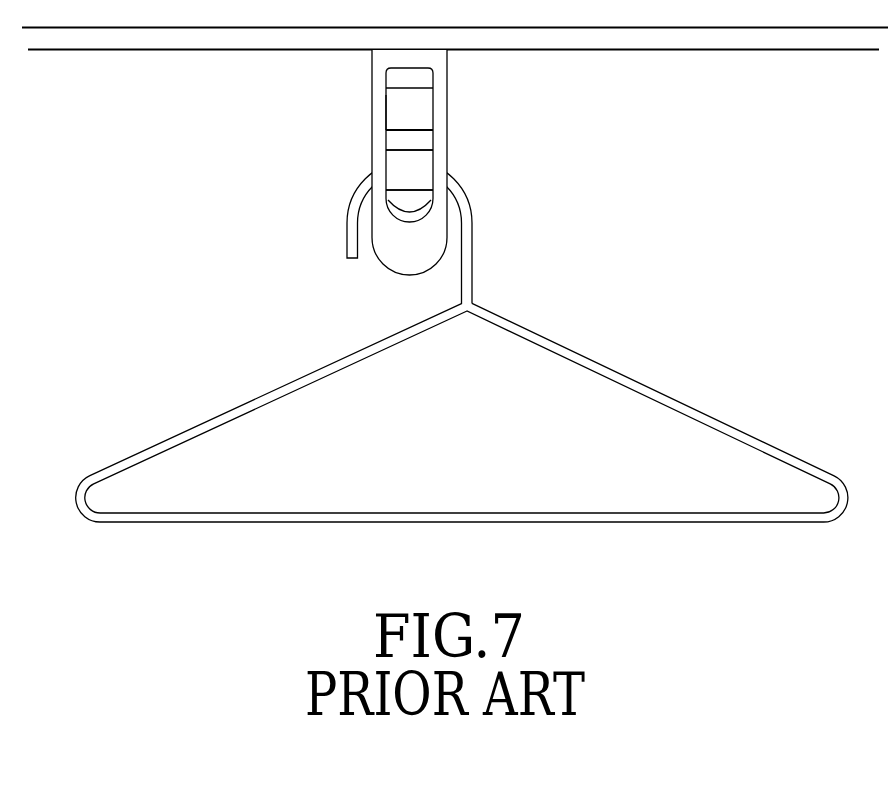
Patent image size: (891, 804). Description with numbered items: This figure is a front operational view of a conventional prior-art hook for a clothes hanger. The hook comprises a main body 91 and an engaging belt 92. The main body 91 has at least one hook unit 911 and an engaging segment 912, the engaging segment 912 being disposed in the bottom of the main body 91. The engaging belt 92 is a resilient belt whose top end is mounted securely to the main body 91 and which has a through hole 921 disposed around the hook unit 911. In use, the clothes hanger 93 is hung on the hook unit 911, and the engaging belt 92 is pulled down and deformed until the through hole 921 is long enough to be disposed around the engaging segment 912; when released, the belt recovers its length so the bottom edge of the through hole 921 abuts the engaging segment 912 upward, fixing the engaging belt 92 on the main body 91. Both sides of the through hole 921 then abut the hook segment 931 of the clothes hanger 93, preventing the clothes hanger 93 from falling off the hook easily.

The main body 91 is at (435, 109).
The hook unit 911 is at (422, 167).
The engaging segment 912 is at (420, 213).
The engaging belt 92 is at (356, 143).
The through hole 921 is at (392, 112).
The clothes hanger 93 is at (630, 360).
The hook segment 931 is at (352, 228).